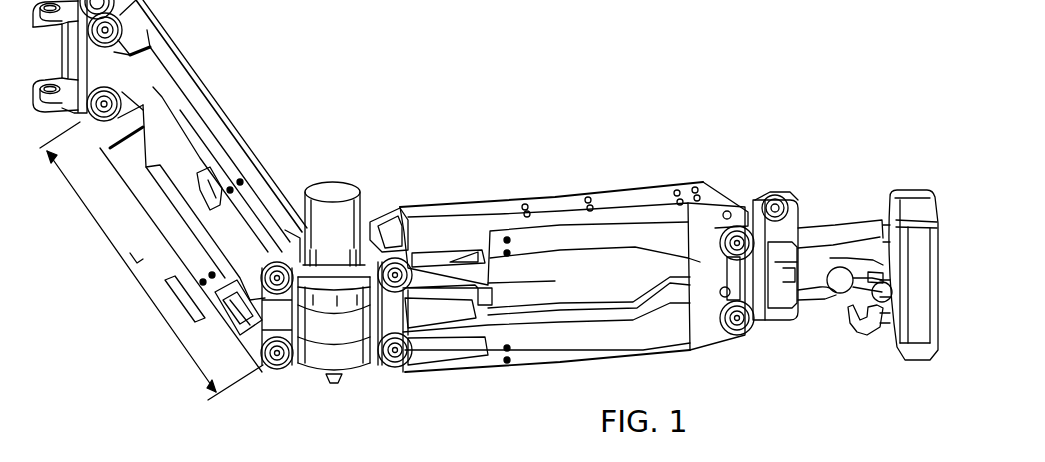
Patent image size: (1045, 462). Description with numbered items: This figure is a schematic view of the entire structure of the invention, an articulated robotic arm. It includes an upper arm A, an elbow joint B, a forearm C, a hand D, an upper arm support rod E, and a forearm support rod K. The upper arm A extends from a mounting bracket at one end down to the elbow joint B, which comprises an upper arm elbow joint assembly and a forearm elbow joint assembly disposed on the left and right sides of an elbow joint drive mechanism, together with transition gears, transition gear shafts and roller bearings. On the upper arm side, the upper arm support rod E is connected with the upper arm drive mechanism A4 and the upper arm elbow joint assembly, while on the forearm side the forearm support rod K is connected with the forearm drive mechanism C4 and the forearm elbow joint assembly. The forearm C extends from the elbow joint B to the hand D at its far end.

The upper arm A is at (177, 100).
The upper arm drive mechanism A4 is at (178, 193).
The upper arm support rod E is at (235, 300).
The elbow joint B is at (332, 195).
The forearm support rod K is at (460, 262).
The forearm C is at (610, 200).
The forearm drive mechanism C4 is at (627, 242).
The hand D is at (833, 232).